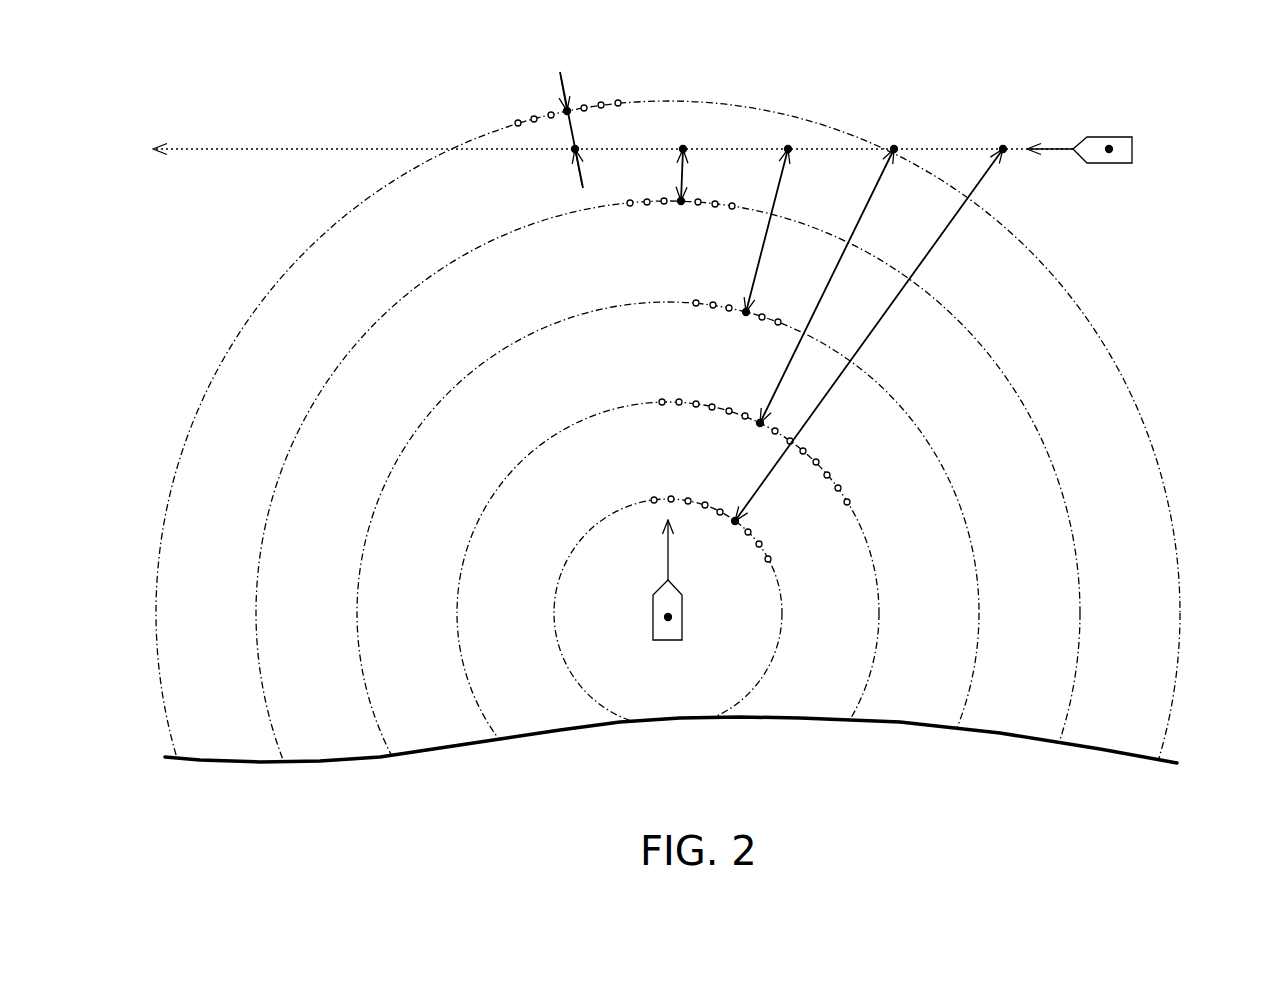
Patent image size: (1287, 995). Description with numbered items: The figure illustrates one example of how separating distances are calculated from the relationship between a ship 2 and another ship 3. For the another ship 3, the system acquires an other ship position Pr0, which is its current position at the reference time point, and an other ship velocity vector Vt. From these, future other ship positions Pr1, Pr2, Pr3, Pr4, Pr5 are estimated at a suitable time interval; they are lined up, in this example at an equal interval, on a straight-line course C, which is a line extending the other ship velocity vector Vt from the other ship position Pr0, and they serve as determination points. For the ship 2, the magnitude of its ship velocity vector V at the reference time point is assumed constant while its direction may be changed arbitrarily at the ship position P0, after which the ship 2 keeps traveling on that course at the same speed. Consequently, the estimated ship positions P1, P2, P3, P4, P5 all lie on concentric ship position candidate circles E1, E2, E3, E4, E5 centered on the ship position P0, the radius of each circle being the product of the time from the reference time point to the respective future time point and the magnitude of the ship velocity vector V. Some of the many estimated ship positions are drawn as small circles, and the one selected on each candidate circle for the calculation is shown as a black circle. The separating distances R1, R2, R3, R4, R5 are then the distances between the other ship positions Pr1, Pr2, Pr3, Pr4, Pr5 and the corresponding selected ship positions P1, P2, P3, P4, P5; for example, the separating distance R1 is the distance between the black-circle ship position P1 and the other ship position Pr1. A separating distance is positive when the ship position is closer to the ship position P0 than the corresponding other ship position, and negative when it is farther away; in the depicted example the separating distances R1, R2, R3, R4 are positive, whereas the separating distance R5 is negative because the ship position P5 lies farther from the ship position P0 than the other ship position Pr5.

The ship 2 is at (680, 628).
The another ship 3 is at (1122, 137).
The straight-line course C is at (362, 148).
The ship velocity vector V is at (648, 550).
The other ship velocity vector Vt is at (1050, 127).
The ship position P0 is at (665, 617).
The other ship position Pr0 is at (1109, 152).
The ship position candidate circle E1 is at (774, 572).
The ship position candidate circle E2 is at (850, 503).
The ship position candidate circle E3 is at (949, 480).
The ship position candidate circle E4 is at (1048, 455).
The ship position candidate circle E5 is at (1151, 445).
The ship position P1 is at (734, 523).
The ship position P2 is at (759, 425).
The ship position P3 is at (745, 314).
The ship position P4 is at (681, 204).
The ship position P5 is at (566, 111).
The other ship position Pr1 is at (1003, 147).
The other ship position Pr2 is at (894, 147).
The other ship position Pr3 is at (788, 147).
The other ship position Pr4 is at (683, 147).
The other ship position Pr5 is at (574, 151).
The separating distance R1 is at (869, 335).
The separating distance R2 is at (827, 286).
The separating distance R3 is at (778, 230).
The separating distance R4 is at (706, 175).
The separating distance R5 is at (603, 130).